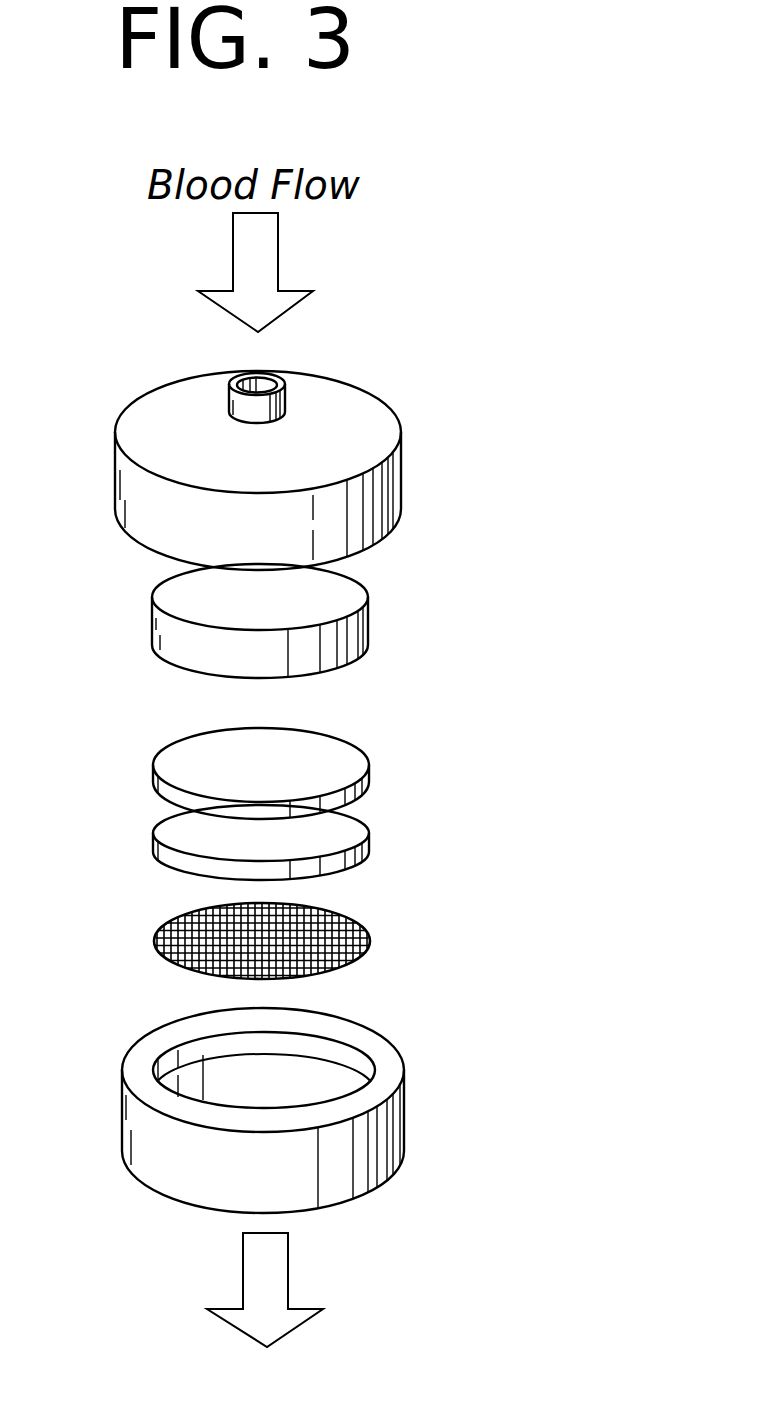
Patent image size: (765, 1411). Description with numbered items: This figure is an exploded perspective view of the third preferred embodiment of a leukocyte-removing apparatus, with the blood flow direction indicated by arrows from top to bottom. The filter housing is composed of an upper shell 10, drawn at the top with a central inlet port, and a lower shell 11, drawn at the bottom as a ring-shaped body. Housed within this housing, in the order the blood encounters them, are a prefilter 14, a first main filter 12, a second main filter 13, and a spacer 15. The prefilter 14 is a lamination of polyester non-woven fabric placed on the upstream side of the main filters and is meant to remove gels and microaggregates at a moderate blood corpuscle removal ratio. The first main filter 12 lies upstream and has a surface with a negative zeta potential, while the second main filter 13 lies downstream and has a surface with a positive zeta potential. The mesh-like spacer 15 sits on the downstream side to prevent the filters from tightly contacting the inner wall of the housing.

The upper shell 10 is at (403, 472).
The lower shell 11 is at (405, 1115).
The first main filter 12 is at (370, 780).
The second main filter 13 is at (370, 840).
The prefilter 14 is at (370, 613).
The spacer 15 is at (370, 942).